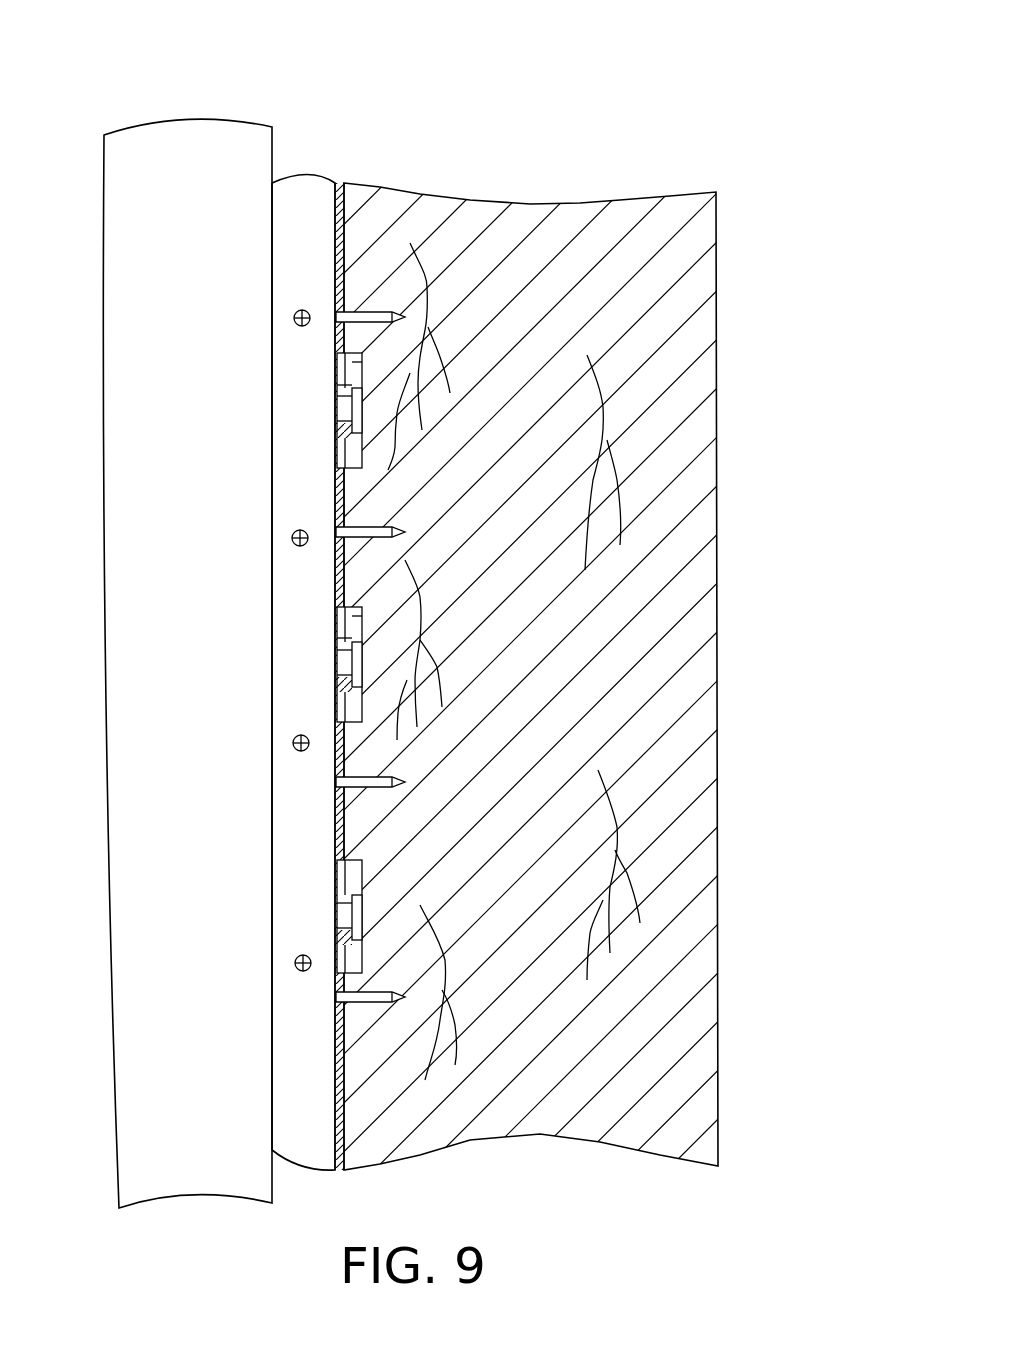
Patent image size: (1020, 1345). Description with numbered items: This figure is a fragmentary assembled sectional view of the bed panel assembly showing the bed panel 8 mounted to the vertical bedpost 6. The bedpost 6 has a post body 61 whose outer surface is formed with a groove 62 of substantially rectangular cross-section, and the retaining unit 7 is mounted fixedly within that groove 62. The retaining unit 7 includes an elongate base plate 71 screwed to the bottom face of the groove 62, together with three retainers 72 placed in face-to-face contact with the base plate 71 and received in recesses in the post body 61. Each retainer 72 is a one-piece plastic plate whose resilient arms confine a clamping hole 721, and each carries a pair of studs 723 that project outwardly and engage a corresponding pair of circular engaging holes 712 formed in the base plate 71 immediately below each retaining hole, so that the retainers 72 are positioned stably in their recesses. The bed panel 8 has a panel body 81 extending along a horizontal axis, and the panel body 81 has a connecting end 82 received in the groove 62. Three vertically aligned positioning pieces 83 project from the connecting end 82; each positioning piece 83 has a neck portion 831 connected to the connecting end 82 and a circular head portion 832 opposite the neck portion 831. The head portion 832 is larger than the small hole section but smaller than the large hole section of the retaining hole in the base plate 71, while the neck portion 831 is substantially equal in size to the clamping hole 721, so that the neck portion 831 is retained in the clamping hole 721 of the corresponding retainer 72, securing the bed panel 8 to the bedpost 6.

The vertical bedpost 6 is at (598, 672).
The post body 61 is at (668, 226).
The groove 62 is at (337, 183).
The retaining unit 7 is at (479, 554).
The base plate 71 is at (350, 306).
The retainer 72 is at (479, 663).
The clamping hole 721 is at (468, 663).
The stud 723 is at (252, 663).
The engaging hole 712 is at (335, 710).
The bed panel 8 is at (219, 606).
The panel body 81 is at (133, 145).
The connecting end 82 is at (282, 188).
The positioning piece 83 is at (510, 509).
The neck portion 831 is at (357, 363).
The head portion 832 is at (352, 385).